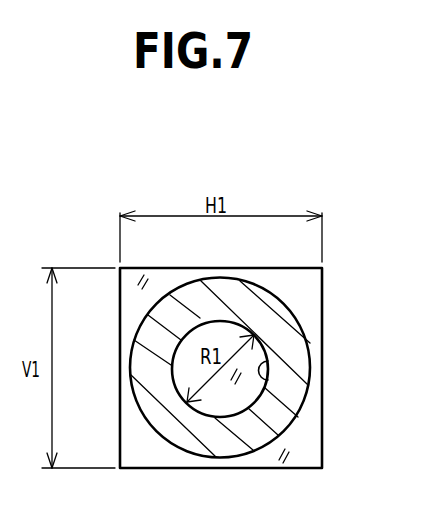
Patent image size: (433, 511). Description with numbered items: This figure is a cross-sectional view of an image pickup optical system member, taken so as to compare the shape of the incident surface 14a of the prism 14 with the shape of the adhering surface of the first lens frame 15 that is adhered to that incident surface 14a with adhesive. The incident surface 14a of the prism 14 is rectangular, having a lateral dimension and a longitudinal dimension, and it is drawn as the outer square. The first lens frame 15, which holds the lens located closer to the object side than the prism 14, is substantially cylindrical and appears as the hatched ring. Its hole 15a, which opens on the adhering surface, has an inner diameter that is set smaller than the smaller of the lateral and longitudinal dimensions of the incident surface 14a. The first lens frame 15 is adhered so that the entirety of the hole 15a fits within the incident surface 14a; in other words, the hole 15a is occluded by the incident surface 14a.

The prism 14 is at (322, 292).
The incident surface 14a is at (307, 438).
The first lens frame 15 is at (310, 355).
The hole 15a is at (268, 381).